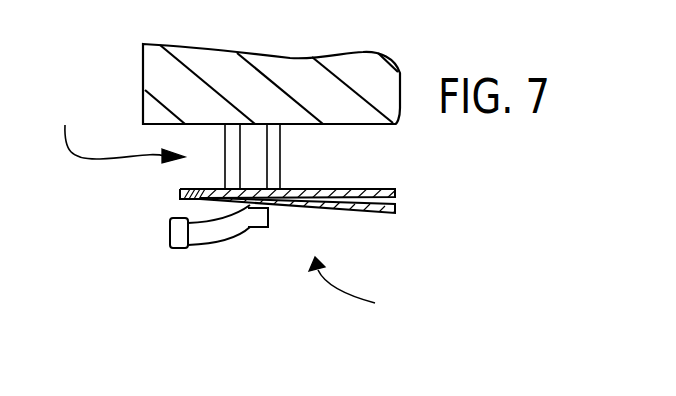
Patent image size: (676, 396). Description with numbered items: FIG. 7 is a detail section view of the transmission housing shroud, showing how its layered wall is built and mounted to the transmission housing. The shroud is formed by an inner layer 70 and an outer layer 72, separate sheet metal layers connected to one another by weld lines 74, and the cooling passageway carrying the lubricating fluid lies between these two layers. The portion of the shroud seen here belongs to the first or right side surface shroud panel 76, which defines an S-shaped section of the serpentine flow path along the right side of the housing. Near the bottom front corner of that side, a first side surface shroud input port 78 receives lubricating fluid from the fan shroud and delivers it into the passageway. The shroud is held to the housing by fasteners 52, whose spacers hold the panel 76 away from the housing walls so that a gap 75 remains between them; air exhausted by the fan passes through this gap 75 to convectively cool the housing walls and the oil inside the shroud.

The fastener 52 is at (257, 228).
The inner layer 70 is at (372, 188).
The outer layer 72 is at (376, 213).
The weld line 74 is at (184, 189).
The gap 75 is at (119, 130).
The first side surface shroud panel 76 is at (362, 289).
The first side surface shroud input port 78 is at (175, 249).